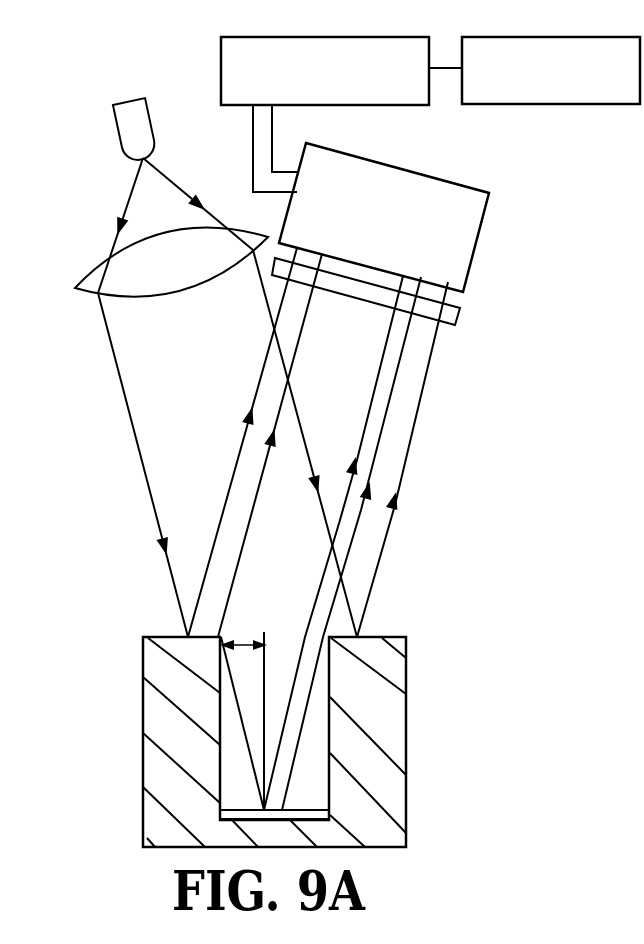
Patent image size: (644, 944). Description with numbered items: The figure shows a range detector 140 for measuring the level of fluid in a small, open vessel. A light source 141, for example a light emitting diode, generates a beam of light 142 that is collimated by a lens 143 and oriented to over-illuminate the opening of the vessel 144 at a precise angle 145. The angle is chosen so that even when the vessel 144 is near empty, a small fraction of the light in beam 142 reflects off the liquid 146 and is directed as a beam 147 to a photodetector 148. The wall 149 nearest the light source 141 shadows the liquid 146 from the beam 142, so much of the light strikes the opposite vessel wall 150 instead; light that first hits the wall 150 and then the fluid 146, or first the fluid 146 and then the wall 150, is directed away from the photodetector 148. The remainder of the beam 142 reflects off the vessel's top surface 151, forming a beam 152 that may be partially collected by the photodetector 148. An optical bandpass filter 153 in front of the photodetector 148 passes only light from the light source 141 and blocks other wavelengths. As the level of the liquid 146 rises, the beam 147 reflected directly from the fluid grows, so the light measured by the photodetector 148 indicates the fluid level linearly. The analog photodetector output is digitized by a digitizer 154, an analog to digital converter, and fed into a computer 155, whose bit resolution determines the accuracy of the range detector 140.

The range detector 140 is at (106, 199).
The light source 141 is at (117, 132).
The beam of light 142 is at (122, 216).
The lens 143 is at (88, 297).
The vessel 144 is at (143, 661).
The angle 145 is at (244, 645).
The liquid 146 is at (245, 808).
The beam 147 is at (290, 354).
The photodetector 148 is at (471, 262).
The wall 149 is at (220, 716).
The vessel wall 150 is at (334, 740).
The top surface 151 is at (151, 637).
The beam 152 is at (275, 378).
The optical bandpass filter 153 is at (455, 325).
The digitizer 154 is at (221, 68).
The computer 155 is at (540, 104).